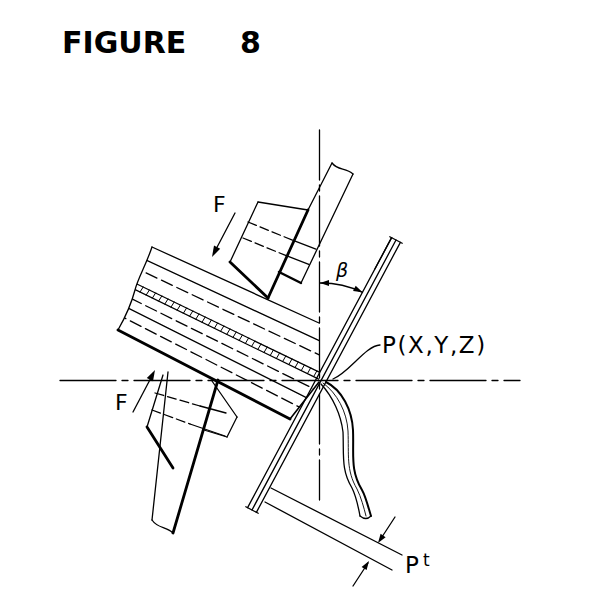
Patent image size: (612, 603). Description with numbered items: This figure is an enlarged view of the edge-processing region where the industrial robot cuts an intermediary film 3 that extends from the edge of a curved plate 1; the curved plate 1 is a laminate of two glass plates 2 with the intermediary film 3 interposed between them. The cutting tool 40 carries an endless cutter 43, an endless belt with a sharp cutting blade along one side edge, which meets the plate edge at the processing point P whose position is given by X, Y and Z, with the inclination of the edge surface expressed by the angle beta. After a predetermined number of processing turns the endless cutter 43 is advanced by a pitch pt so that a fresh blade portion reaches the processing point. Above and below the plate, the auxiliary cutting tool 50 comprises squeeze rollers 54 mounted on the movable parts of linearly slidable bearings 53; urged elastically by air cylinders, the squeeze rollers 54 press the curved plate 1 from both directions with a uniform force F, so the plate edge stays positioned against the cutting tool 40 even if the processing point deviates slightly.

The curved plate 1 is at (160, 248).
The glass plates 2 is at (187, 262).
The intermediary film 3 is at (355, 428).
The cutting tool 40 is at (368, 314).
The endless cutter 43 is at (388, 271).
The auxiliary cutting tool 50 is at (157, 467).
The linearly slidable bearing 53 is at (335, 182).
The squeeze roller 54 is at (258, 203).